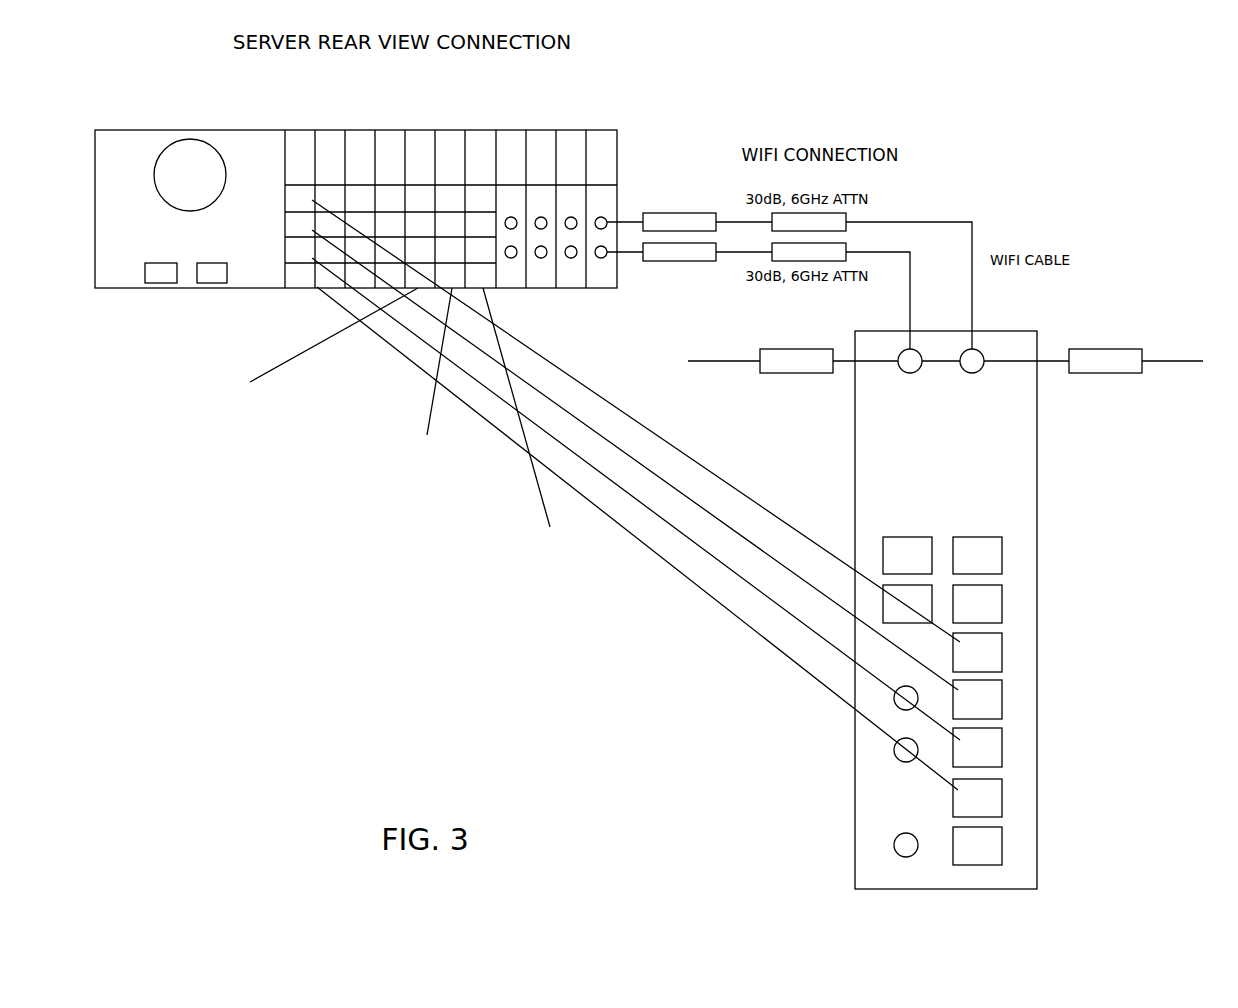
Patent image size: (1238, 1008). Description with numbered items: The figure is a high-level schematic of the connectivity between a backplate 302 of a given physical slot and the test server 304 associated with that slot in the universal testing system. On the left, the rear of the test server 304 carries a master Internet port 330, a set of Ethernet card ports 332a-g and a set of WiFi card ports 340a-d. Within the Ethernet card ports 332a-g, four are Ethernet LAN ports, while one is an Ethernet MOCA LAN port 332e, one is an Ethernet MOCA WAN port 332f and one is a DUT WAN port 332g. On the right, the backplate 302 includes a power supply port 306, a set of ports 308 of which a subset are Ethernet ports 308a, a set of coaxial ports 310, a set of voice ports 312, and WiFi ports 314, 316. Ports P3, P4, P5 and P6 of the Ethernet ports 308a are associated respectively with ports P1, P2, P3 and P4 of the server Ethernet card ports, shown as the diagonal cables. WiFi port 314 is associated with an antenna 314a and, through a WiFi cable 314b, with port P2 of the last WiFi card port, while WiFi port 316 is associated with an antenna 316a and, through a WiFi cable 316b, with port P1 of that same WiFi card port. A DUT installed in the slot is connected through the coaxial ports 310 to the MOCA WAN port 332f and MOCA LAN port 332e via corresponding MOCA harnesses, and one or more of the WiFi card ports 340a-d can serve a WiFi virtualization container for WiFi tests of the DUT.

The test server 304 is at (128, 130).
The master Internet port 330 is at (160, 283).
The Ethernet card ports 332a-g is at (287, 127).
The WiFi card ports 340a-d is at (617, 127).
The Ethernet MOCA LAN port 332e is at (311, 363).
The Ethernet MOCA WAN port 332f is at (421, 386).
The DUT WAN port 332g is at (536, 436).
The WiFi cable 316b is at (972, 218).
The WiFi cable 314b is at (910, 290).
The WiFi port 314 is at (903, 350).
The WiFi port 316 is at (982, 352).
The antenna 314a is at (749, 362).
The antenna 316a is at (1151, 354).
The backplate 302 is at (1020, 457).
The voice ports 312 is at (870, 547).
The coaxial ports 310 is at (862, 732).
The power supply port 306 is at (897, 847).
The Ethernet ports 308a is at (1042, 725).
The set of ports 308 is at (1075, 701).